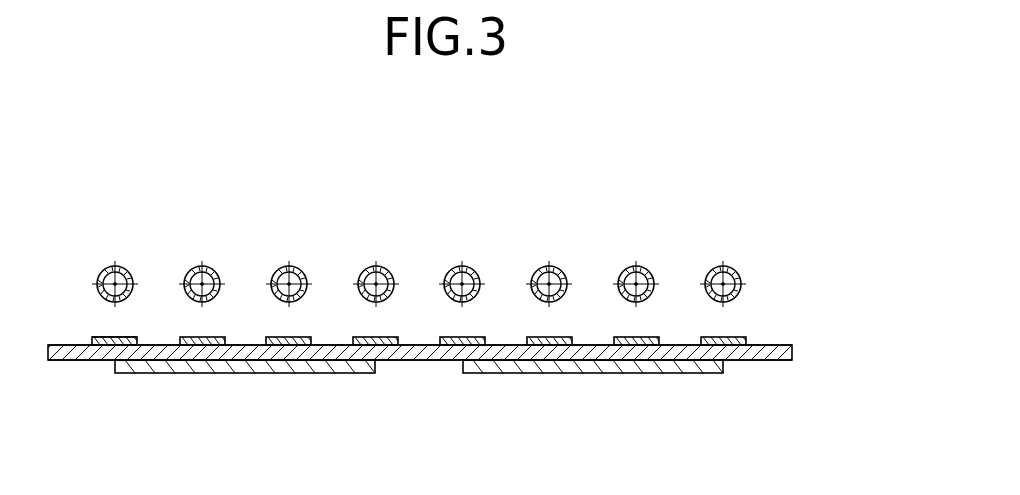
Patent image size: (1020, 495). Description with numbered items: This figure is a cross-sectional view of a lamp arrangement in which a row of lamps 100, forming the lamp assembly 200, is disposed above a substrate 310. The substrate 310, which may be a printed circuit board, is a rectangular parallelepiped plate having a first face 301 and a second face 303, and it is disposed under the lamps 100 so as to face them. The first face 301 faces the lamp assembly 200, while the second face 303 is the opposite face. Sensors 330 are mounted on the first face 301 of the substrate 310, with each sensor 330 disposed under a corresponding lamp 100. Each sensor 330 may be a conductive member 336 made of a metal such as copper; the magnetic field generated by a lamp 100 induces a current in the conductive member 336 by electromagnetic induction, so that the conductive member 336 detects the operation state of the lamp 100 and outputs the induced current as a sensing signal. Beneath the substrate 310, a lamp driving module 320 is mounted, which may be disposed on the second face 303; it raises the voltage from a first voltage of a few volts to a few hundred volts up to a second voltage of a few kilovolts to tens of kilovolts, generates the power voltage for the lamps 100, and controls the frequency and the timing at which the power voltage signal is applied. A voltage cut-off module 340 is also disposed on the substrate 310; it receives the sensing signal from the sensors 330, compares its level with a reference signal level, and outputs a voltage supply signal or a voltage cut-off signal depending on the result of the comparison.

The lamp 100 is at (438, 265).
The lamp assembly 200 is at (584, 205).
The substrate 310 is at (808, 352).
The first face 301 is at (781, 345).
The second face 303 is at (781, 360).
The sensor 330 is at (93, 325).
The conductive member 336 is at (126, 337).
The lamp driving module 320 is at (240, 373).
The voltage cut-off module 340 is at (602, 373).